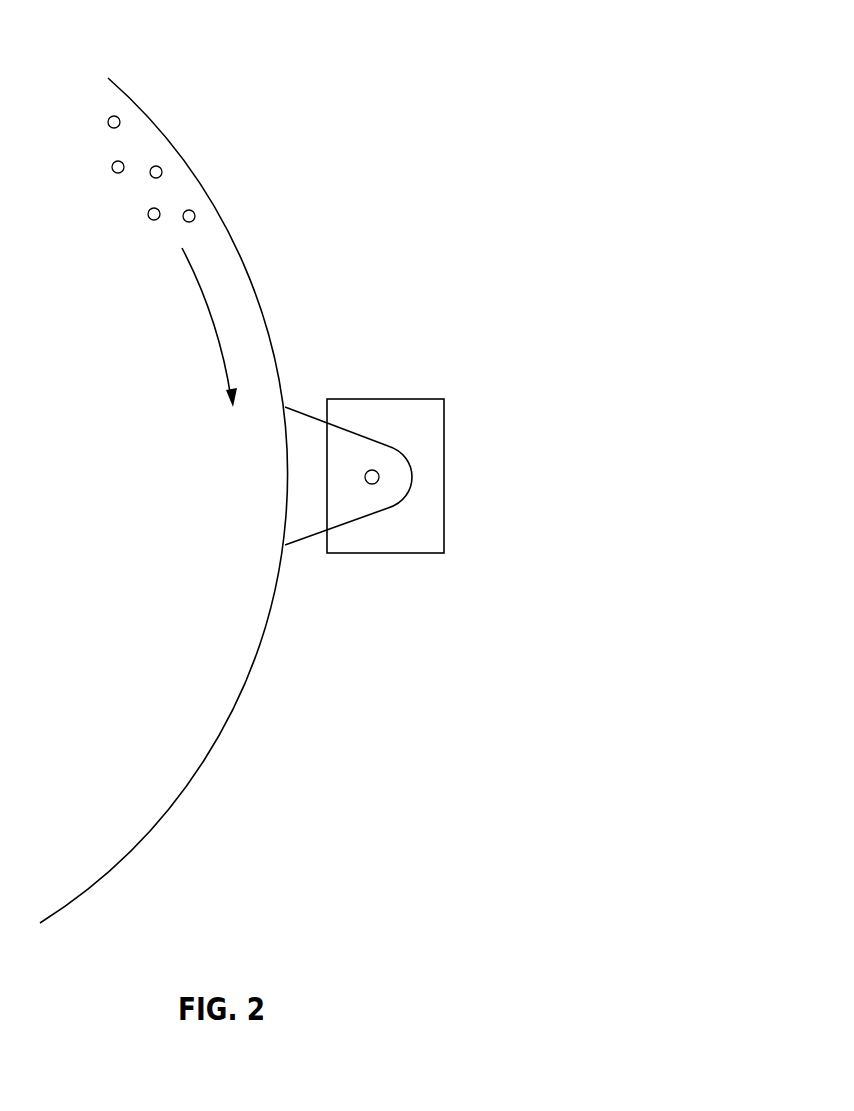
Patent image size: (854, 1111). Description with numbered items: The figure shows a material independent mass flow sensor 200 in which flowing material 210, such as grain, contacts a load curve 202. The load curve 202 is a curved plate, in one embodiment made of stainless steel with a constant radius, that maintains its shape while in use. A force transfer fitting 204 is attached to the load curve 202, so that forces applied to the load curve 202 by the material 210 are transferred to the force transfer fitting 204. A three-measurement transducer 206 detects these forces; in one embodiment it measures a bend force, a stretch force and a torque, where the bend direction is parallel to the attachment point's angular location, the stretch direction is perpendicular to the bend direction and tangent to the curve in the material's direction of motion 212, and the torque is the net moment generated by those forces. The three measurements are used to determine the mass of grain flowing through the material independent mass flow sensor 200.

The material independent mass flow sensor 200 is at (423, 53).
The load curve 202 is at (253, 670).
The force transfer fitting 204 is at (307, 522).
The three-measurement transducer 206 is at (422, 413).
The material 210 is at (120, 122).
The direction of movement 212 is at (203, 341).